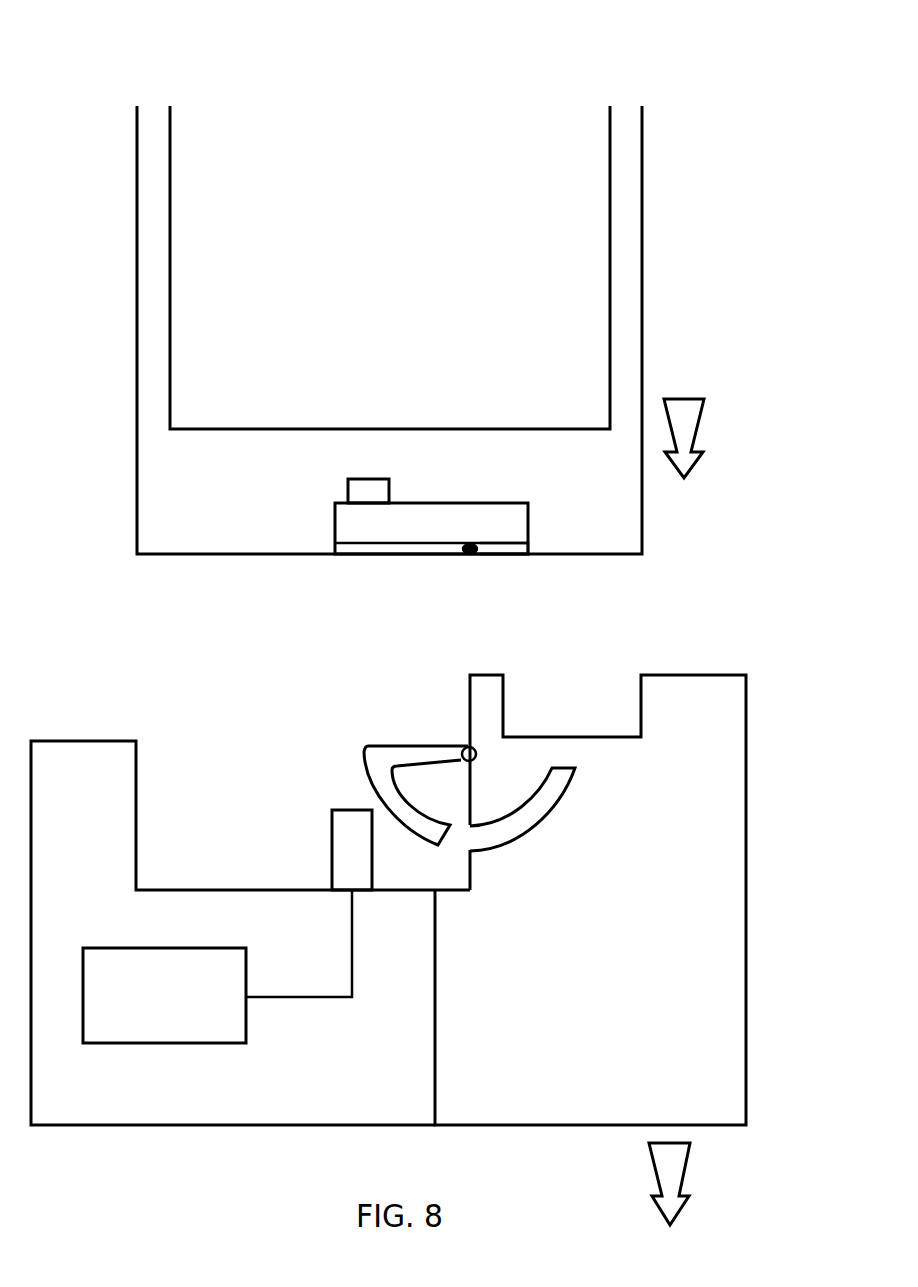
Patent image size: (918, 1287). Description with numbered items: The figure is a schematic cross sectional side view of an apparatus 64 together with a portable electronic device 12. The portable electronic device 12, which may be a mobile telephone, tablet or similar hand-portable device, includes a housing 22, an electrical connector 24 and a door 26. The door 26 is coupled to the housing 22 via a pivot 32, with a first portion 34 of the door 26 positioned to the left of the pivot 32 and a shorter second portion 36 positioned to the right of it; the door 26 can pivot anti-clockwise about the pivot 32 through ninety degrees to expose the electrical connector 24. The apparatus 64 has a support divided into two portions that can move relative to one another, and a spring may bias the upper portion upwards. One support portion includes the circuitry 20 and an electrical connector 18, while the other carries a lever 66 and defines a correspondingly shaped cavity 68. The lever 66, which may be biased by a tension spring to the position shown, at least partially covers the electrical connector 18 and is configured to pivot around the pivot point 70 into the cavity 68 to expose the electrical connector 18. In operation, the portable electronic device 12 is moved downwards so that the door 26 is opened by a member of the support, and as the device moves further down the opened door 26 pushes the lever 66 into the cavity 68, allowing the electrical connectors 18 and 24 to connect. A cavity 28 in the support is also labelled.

The portable electronic device 12 is at (454, 330).
The electrical connector 18 is at (340, 832).
The circuitry 20 is at (165, 1044).
The housing 22 is at (632, 160).
The electrical connector 24 is at (369, 490).
The door 26 is at (345, 548).
The cavity 28 is at (223, 824).
The pivot 32 is at (468, 557).
The first portion 34 is at (399, 555).
The second portion 36 is at (508, 550).
The apparatus 64 is at (570, 716).
The lever 66 is at (378, 752).
The cavity 68 is at (528, 820).
The pivot point 70 is at (462, 748).